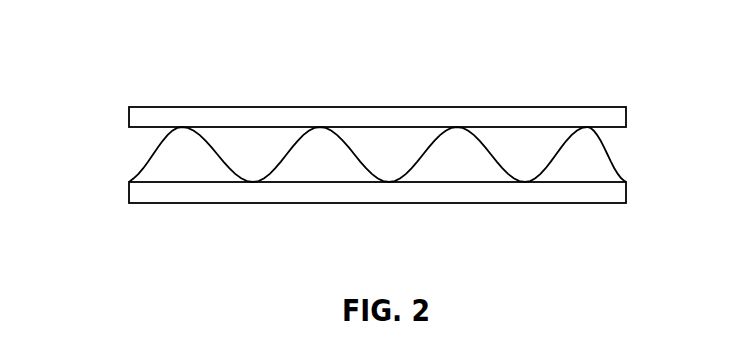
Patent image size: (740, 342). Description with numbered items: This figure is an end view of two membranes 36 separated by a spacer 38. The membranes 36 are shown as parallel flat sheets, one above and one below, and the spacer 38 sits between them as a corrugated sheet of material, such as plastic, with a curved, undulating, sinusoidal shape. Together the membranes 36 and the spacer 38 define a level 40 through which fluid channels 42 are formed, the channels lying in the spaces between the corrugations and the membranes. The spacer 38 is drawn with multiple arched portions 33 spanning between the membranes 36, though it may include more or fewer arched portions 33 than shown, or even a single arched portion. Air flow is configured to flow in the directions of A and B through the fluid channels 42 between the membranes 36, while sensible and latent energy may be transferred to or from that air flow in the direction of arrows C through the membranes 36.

The level 40 is at (90, 190).
The membranes 36 is at (612, 107).
The spacer 38 is at (618, 153).
The fluid channels 42 is at (255, 147).
The arched portions 33 is at (500, 162).
The air flow direction A is at (392, 148).
The air flow direction B is at (453, 161).
The energy transfer arrows C is at (352, 167).